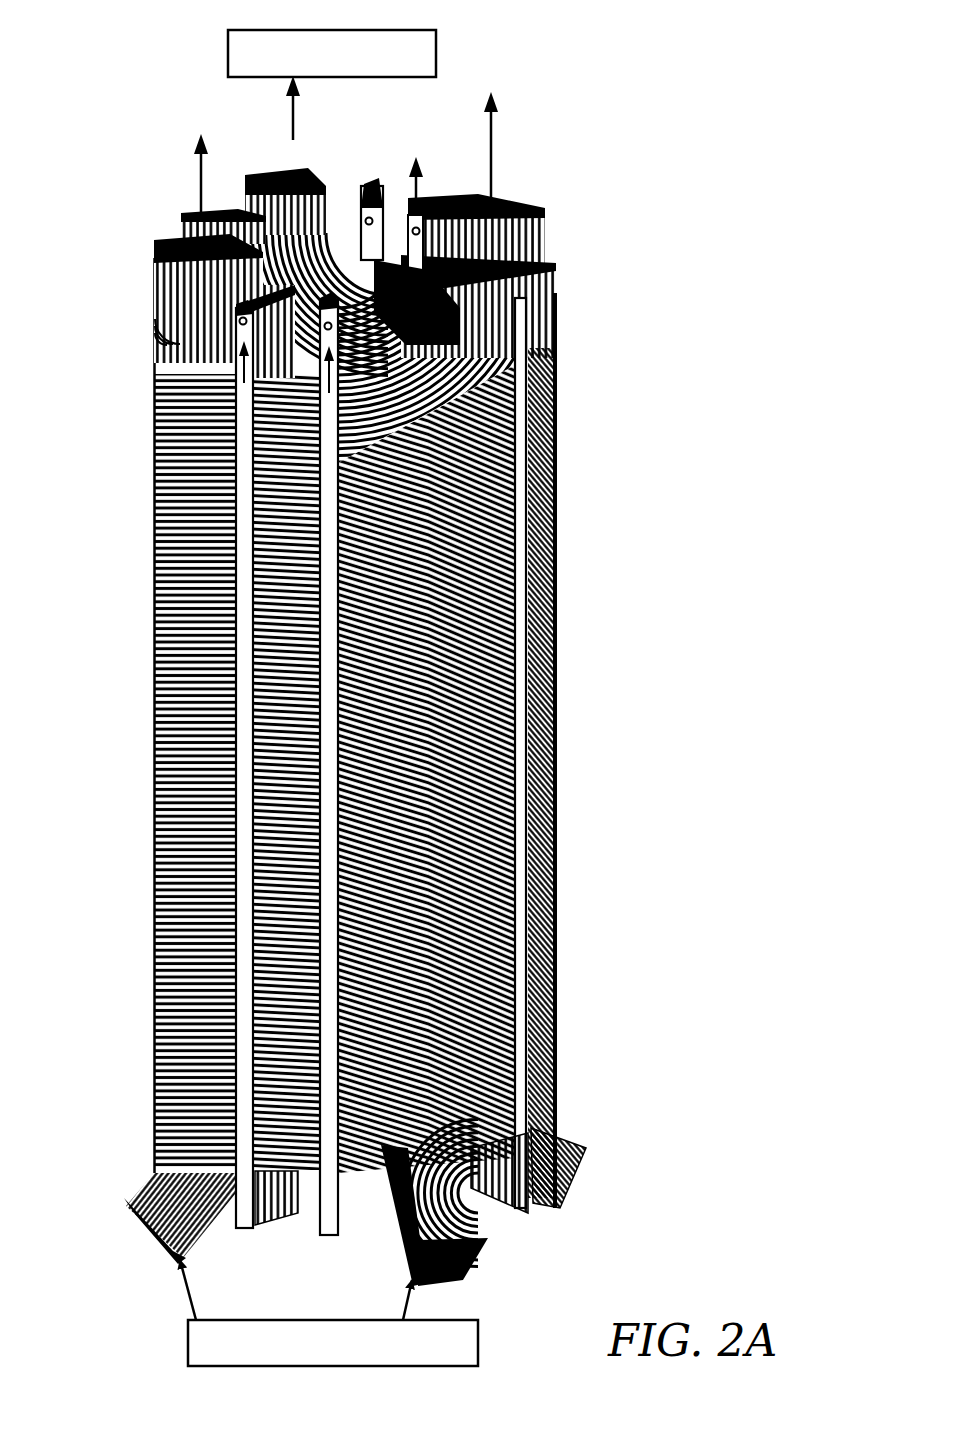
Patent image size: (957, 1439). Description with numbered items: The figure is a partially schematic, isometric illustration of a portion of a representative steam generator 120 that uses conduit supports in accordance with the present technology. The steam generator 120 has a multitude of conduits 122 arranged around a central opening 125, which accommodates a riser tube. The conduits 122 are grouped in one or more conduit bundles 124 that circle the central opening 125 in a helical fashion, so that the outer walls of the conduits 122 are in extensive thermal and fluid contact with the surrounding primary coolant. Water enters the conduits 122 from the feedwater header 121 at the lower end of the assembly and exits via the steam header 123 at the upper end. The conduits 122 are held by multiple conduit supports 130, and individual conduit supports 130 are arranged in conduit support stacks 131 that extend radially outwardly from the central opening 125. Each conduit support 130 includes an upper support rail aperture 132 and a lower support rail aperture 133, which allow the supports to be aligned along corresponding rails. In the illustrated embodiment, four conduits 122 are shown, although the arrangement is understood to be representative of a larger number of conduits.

The steam generator 120 is at (510, 118).
The feedwater header 121 is at (472, 1338).
The conduits 122 is at (152, 316).
The steam header 123 is at (431, 46).
The conduit bundles 124 is at (142, 224).
The central opening 125 is at (338, 262).
The conduit supports 130 is at (506, 246).
The conduit support stacks 131 is at (560, 320).
The upper support rail aperture 132 is at (386, 172).
The lower support rail aperture 133 is at (322, 1214).